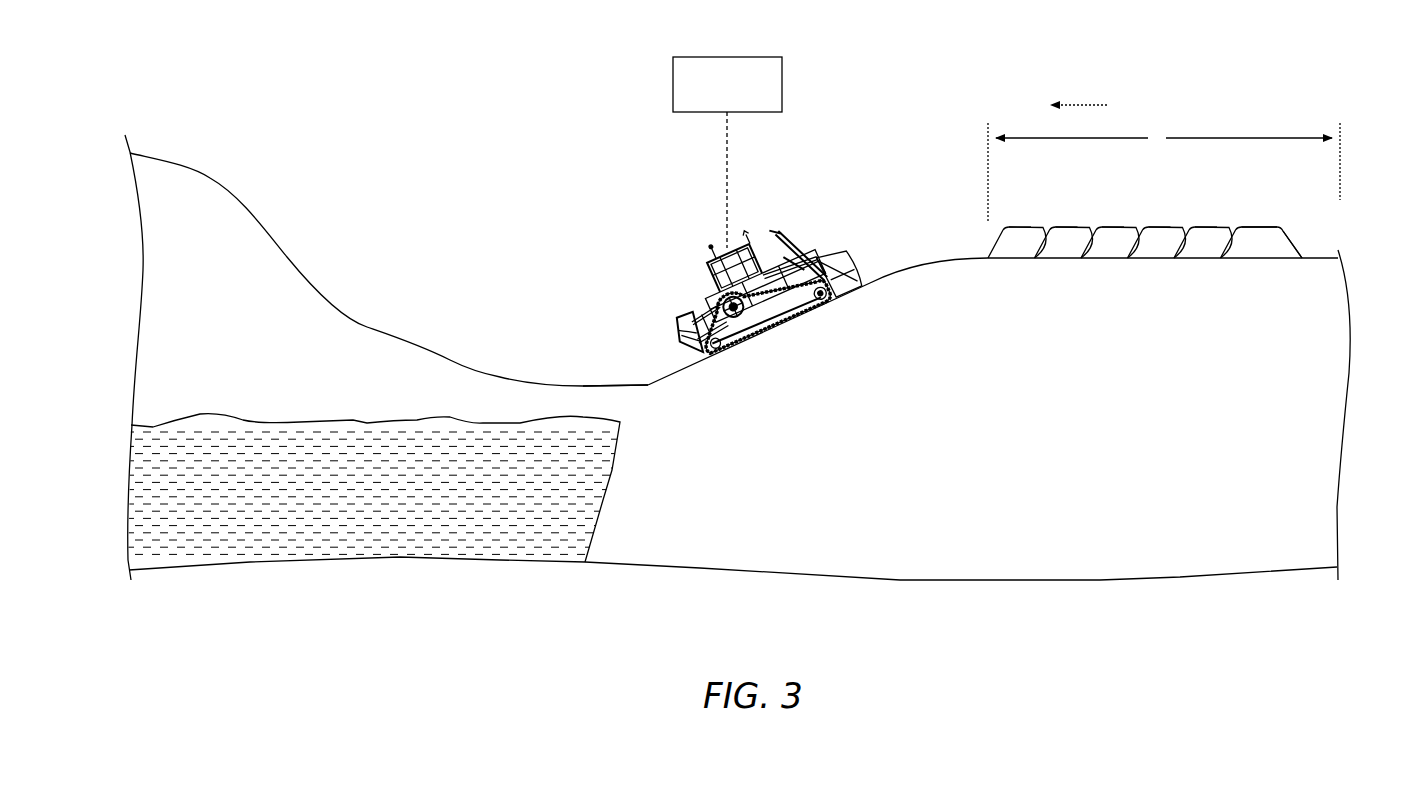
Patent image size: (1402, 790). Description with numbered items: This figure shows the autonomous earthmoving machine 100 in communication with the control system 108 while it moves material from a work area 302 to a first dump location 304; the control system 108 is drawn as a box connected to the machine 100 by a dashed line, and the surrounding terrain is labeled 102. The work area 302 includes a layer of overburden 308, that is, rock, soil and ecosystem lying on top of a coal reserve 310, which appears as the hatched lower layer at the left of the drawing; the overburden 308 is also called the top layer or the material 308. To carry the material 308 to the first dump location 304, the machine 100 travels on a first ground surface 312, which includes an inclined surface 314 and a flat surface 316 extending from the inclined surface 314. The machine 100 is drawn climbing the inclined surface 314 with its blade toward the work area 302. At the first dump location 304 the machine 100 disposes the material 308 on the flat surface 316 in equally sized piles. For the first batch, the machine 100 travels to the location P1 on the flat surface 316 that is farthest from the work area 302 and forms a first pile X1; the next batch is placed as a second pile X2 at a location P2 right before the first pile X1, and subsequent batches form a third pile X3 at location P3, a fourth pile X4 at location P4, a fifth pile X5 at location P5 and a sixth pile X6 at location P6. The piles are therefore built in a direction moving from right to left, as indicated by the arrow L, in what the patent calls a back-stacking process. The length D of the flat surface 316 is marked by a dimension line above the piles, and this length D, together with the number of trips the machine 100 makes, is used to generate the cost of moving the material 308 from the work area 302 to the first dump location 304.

The machine 100 is at (717, 263).
The worksite 102 is at (210, 178).
The control system 108 is at (743, 96).
The work area 302 is at (591, 383).
The first dump location 304 is at (1320, 258).
The overburden 308 is at (480, 403).
The coal reserve 310 is at (387, 511).
The first ground surface 312 is at (897, 243).
The inclined surface 314 is at (683, 366).
The flat surface 316 is at (1305, 258).
The location P1 is at (1220, 253).
The location P2 is at (1173, 253).
The location P3 is at (1126, 253).
The location P4 is at (1079, 253).
The location P5 is at (1033, 253).
The location P6 is at (988, 255).
The first pile X1 is at (1257, 227).
The second pile X2 is at (1207, 227).
The third pile X3 is at (1160, 227).
The fourth pile X4 is at (1113, 227).
The fifth pile X5 is at (1067, 227).
The sixth pile X6 is at (1020, 227).
The length D is at (1164, 173).
The arrow L is at (1086, 105).